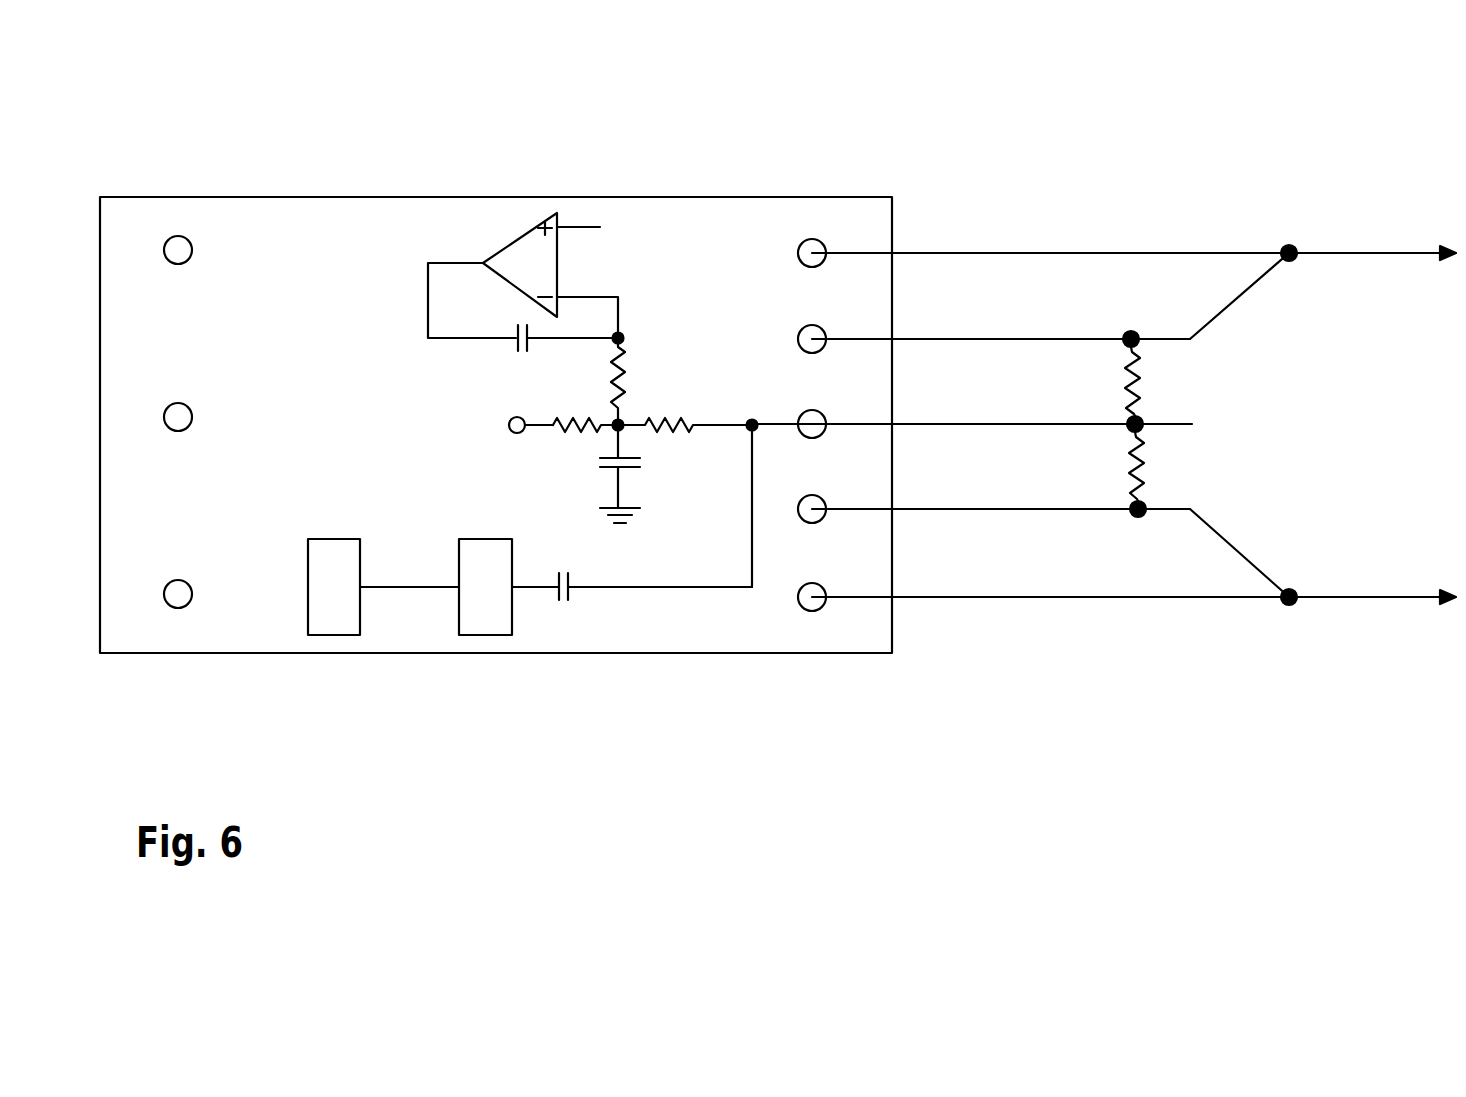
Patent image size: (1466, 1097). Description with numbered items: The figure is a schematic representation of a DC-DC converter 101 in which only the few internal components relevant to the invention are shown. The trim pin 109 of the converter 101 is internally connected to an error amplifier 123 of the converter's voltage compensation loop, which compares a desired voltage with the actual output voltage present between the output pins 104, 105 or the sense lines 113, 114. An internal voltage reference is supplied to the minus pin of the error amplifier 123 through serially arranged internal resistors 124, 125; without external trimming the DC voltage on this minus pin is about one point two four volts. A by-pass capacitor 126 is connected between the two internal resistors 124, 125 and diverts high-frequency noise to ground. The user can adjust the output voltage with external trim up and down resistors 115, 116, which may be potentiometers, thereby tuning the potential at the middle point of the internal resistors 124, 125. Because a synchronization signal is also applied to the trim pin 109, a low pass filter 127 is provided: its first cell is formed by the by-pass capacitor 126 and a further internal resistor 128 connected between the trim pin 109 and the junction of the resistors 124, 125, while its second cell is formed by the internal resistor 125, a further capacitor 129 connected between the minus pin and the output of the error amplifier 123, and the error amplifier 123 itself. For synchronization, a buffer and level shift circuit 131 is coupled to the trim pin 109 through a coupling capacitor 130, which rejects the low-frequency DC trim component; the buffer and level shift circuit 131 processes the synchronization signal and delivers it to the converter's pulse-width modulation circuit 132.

The DC-DC converter 101 is at (292, 203).
The output pin 104 is at (812, 250).
The output pin 105 is at (805, 600).
The trim pin 109 is at (815, 422).
The sense line 113 is at (920, 337).
The sense line 114 is at (951, 512).
The external trim up resistor 115 is at (1147, 372).
The external trim down resistor 116 is at (1150, 460).
The error amplifier 123 is at (510, 253).
The internal resistor 124 is at (565, 430).
The internal resistor 125 is at (630, 368).
The by-pass capacitor 126 is at (632, 462).
The low pass filter 127 is at (434, 459).
The internal resistor 128 is at (670, 413).
The capacitor 129 is at (510, 342).
The coupling capacitor 130 is at (563, 605).
The buffer and level shift circuit 131 is at (482, 622).
The pulse-width modulation circuit 132 is at (332, 622).